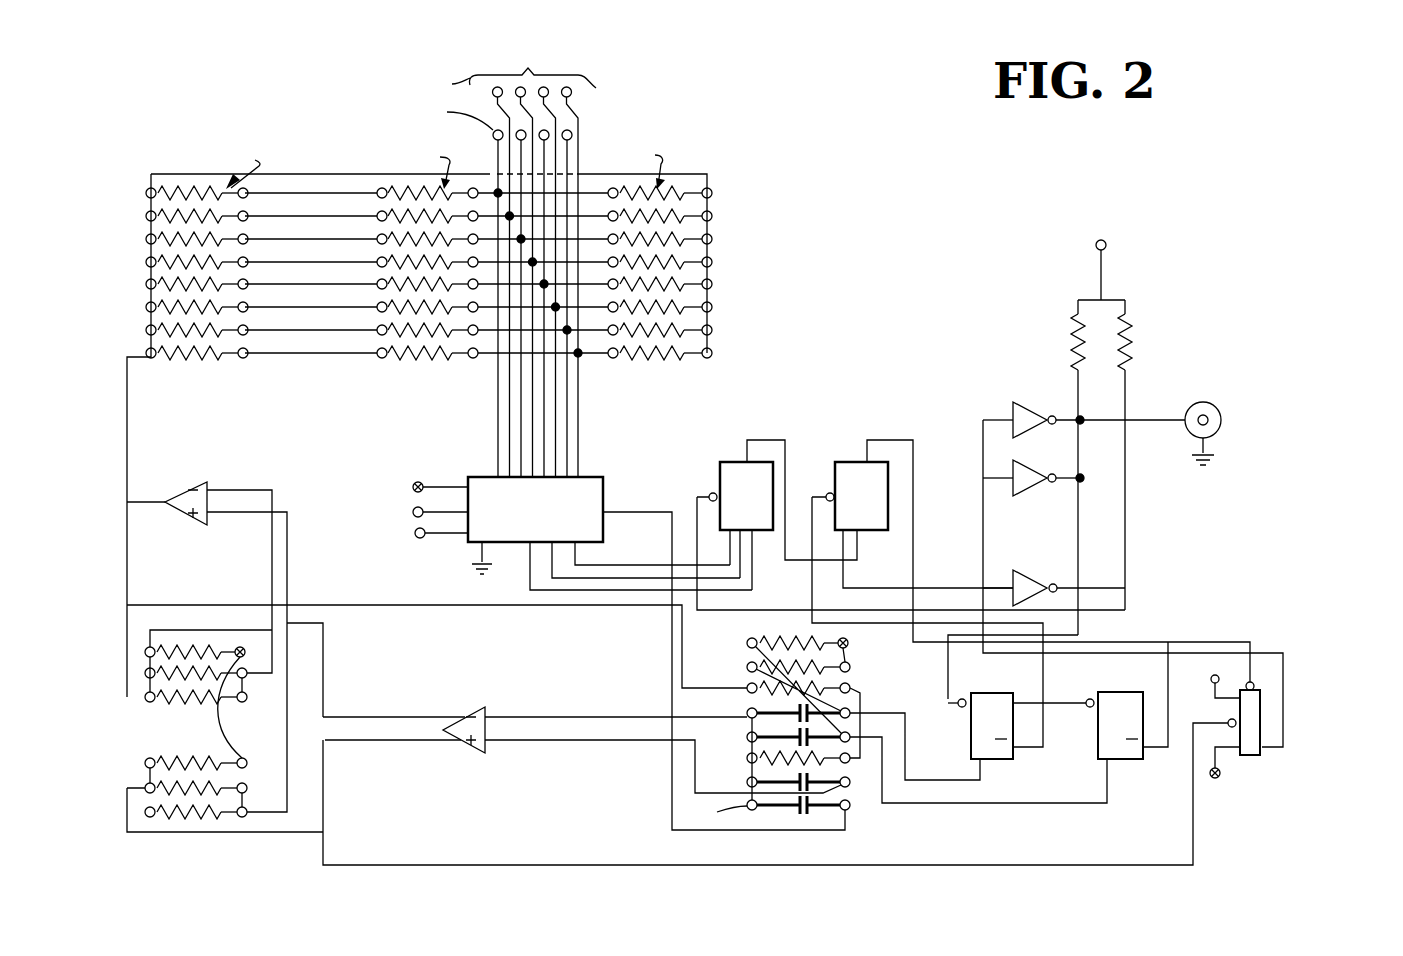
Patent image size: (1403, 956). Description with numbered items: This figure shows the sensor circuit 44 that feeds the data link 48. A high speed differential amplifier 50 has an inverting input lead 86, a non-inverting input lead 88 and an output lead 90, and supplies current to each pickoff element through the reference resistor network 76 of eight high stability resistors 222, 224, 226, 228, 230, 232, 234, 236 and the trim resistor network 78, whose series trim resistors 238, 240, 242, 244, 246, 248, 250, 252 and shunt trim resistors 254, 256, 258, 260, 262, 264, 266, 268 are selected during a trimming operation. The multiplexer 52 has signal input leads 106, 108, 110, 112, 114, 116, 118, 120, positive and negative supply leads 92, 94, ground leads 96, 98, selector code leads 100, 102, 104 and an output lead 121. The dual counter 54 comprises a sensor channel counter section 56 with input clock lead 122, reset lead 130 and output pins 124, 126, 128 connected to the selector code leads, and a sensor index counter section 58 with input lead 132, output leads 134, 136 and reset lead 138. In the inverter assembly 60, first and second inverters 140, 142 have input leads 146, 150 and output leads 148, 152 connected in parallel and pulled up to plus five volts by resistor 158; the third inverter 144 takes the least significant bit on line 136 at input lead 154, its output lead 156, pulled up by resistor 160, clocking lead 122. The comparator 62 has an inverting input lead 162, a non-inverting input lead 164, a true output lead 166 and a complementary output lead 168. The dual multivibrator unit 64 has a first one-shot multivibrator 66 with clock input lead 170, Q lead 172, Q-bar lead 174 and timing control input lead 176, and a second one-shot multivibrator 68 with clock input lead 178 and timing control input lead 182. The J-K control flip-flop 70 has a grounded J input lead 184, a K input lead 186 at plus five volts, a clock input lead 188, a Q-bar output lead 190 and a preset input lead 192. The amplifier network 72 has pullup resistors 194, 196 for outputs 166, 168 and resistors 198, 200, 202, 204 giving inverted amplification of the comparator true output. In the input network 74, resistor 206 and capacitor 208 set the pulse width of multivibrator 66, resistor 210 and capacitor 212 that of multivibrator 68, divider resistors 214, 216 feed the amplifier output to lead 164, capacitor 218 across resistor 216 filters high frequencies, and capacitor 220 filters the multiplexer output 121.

The sensor circuit 44 is at (985, 265).
The data link 48 is at (1247, 433).
The high speed differential amplifier 50 is at (187, 486).
The multiplexer 52 is at (603, 480).
The dual counter 54 is at (858, 425).
The sensor channel counter section 56 is at (719, 472).
The sensor index counter section 58 is at (882, 476).
The inverter assembly 60 is at (1148, 570).
The comparator 62 is at (470, 756).
The dual multivibrator unit 64 is at (1073, 775).
The first one-shot multivibrator 66 is at (969, 735).
The second one-shot multivibrator 68 is at (1096, 722).
The control flip-flop 70 is at (1246, 795).
The amplifier network 72 is at (243, 842).
The multivibrator and comparator input network 74 is at (674, 836).
The reference resistor network 76 is at (278, 130).
The trim resistor network 78 is at (588, 134).
The inverting input lead 86 is at (243, 490).
The non-inverting input lead 88 is at (219, 513).
The output lead 90 is at (140, 503).
The positive supply lead 92 is at (438, 471).
The negative supply lead 94 is at (416, 538).
The first ground lead 96 is at (470, 557).
The second ground lead 98 is at (413, 509).
The first selector code lead 100 is at (528, 567).
The second selector code lead 102 is at (595, 567).
The third selector code lead 104 is at (650, 557).
The signal input lead 106 is at (547, 385).
The signal input lead 108 is at (567, 420).
The signal input lead 110 is at (578, 440).
The signal input lead 112 is at (558, 400).
The signal input lead 114 is at (532, 437).
The signal input lead 116 is at (498, 377).
The signal input lead 118 is at (509, 393).
The signal input lead 120 is at (521, 413).
The output lead 121 is at (658, 632).
The input clock lead 122 is at (695, 503).
The output pin 124 is at (732, 594).
The output pin 126 is at (752, 563).
The output pin 128 is at (711, 570).
The reset lead 130 is at (758, 418).
The input lead 132 is at (810, 497).
The output lead 134 is at (849, 553).
The output lead 136 is at (845, 572).
The reset lead 138 is at (880, 440).
The first inverter 140 is at (1028, 402).
The second inverter 142 is at (1029, 463).
The third inverter 144 is at (1035, 572).
The input lead 146 is at (990, 418).
The output lead 148 is at (1068, 418).
The input lead 150 is at (1002, 484).
The output lead 152 is at (1067, 482).
The input lead 154 is at (1000, 584).
The output lead 156 is at (1072, 587).
The resistor 158 is at (1071, 320).
The resistor 160 is at (1129, 335).
The inverting input lead 162 is at (654, 716).
The non-inverting input lead 164 is at (612, 742).
The true output lead 166 is at (399, 716).
The complementary output lead 168 is at (352, 742).
The clock input lead 170 is at (960, 700).
The positive output Q lead 172 is at (1022, 702).
The negative output Q-bar lead 174 is at (1027, 748).
The timing control input lead 176 is at (974, 769).
The clock input lead 178 is at (1068, 701).
The timing control input lead 182 is at (1095, 805).
The J input lead 184 is at (1214, 684).
The K input lead 186 is at (1223, 750).
The clock input lead 188 is at (1226, 722).
The Q-bar output lead 190 is at (1263, 753).
The preset input lead 192 is at (1250, 643).
The first pullup resistor 194 is at (146, 648).
The second pullup resistor 196 is at (190, 760).
The third resistor 198 is at (146, 673).
The fourth resistor 200 is at (170, 698).
The fifth resistor 202 is at (146, 788).
The sixth resistor 204 is at (146, 812).
The resistor 206 is at (808, 641).
The capacitor 208 is at (797, 711).
The resistor 210 is at (851, 667).
The capacitor 212 is at (797, 735).
The first resistor 214 is at (749, 684).
The second resistor 216 is at (770, 755).
The capacitor 218 is at (797, 782).
The capacitor 220 is at (806, 815).
The high stability resistor 222 is at (145, 194).
The high stability resistor 224 is at (145, 216).
The high stability resistor 226 is at (146, 239).
The high stability resistor 228 is at (146, 262).
The high stability resistor 230 is at (146, 284).
The high stability resistor 232 is at (146, 307).
The high stability resistor 234 is at (146, 330).
The high stability resistor 236 is at (146, 353).
The series trim resistor 238 is at (377, 192).
The series trim resistor 240 is at (377, 215).
The series trim resistor 242 is at (377, 238).
The series trim resistor 244 is at (377, 261).
The series trim resistor 246 is at (377, 283).
The series trim resistor 248 is at (377, 306).
The series trim resistor 250 is at (377, 329).
The series trim resistor 252 is at (377, 352).
The shunt trim resistor 254 is at (711, 190).
The shunt trim resistor 256 is at (711, 213).
The shunt trim resistor 258 is at (711, 236).
The shunt trim resistor 260 is at (711, 259).
The shunt trim resistor 262 is at (711, 281).
The shunt trim resistor 264 is at (711, 304).
The shunt trim resistor 266 is at (711, 327).
The shunt trim resistor 268 is at (711, 350).